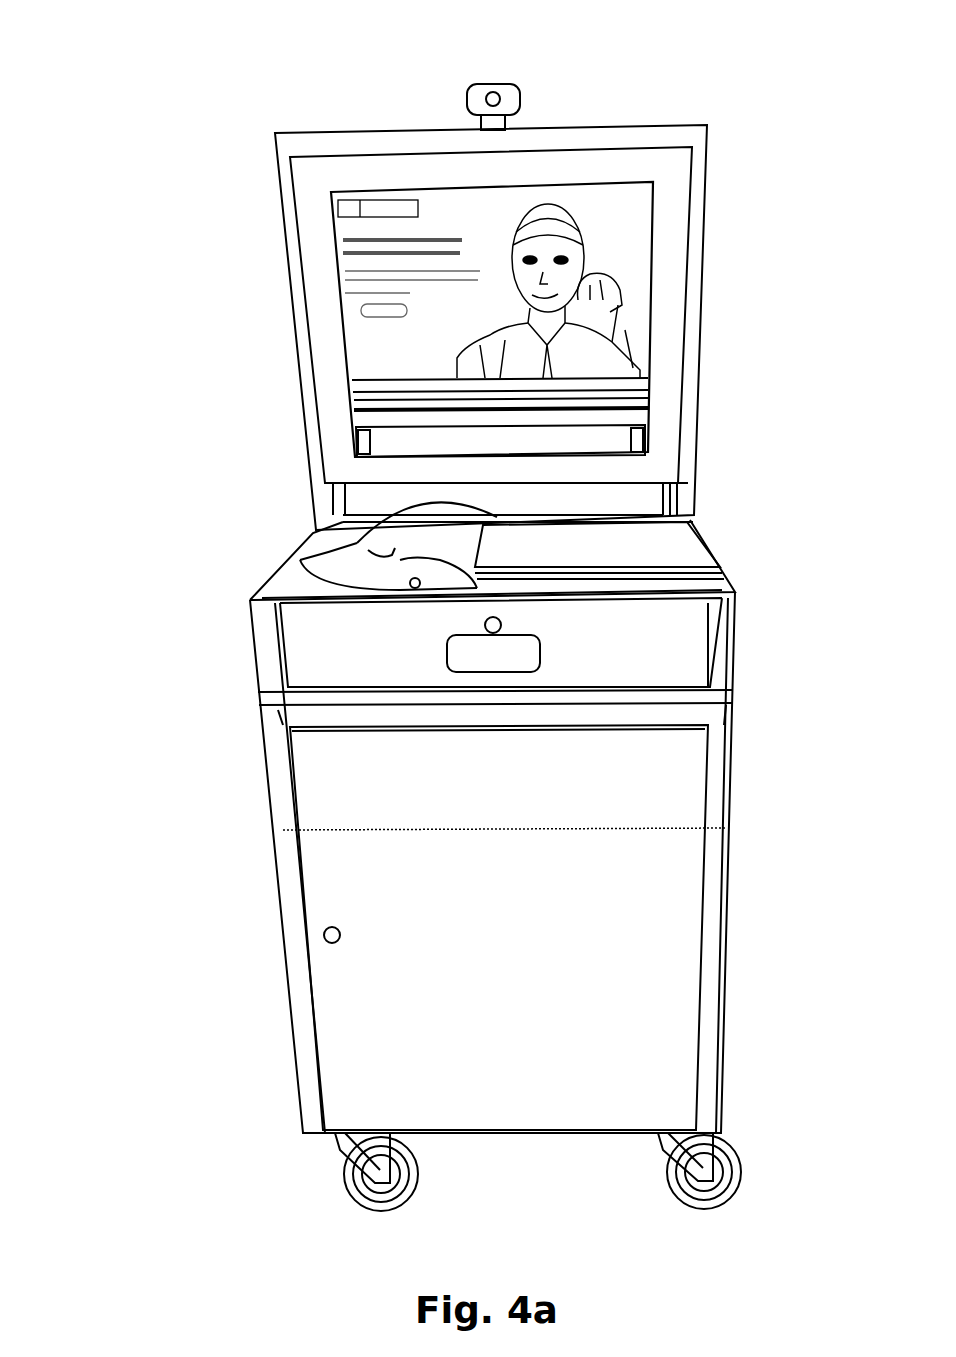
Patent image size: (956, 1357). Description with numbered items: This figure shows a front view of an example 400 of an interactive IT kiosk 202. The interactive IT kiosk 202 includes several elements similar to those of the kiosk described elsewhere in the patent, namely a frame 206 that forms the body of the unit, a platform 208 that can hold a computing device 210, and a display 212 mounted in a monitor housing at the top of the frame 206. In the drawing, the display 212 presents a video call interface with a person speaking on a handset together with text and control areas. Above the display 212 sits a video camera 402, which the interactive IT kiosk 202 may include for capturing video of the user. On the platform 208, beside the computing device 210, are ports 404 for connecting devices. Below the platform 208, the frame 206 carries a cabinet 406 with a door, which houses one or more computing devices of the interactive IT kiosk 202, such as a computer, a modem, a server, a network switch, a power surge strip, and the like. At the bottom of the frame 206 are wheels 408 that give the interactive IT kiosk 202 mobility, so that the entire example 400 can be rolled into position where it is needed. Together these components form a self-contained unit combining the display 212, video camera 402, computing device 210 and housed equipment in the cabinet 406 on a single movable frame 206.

The example of an interactive IT kiosk 400 is at (222, 33).
The interactive IT kiosk 202 is at (278, 103).
The video camera 402 is at (518, 100).
The display 212 is at (658, 282).
The ports 404 is at (377, 540).
The computing device 210 is at (705, 548).
The platform 208 is at (715, 582).
The frame 206 is at (257, 670).
The cabinet 406 is at (505, 913).
The wheels 408 is at (665, 1182).